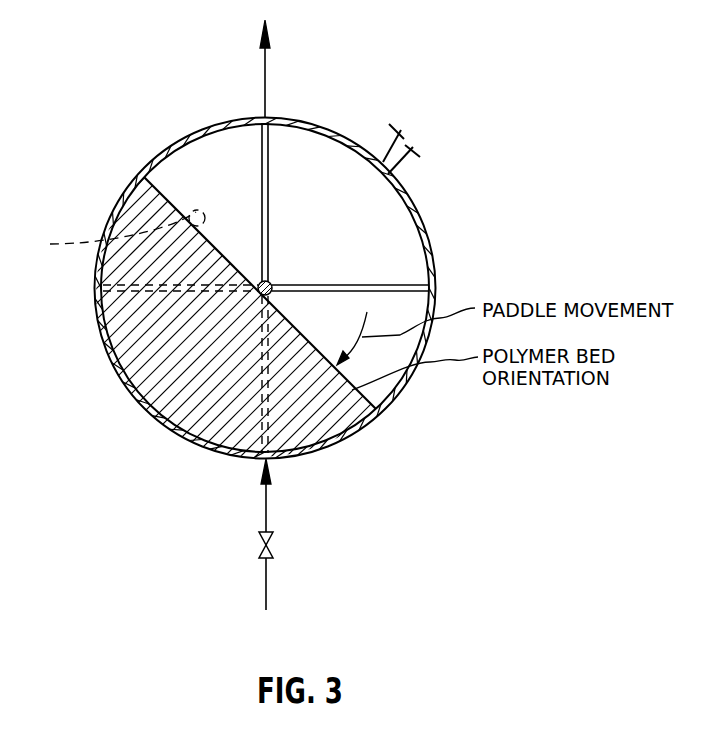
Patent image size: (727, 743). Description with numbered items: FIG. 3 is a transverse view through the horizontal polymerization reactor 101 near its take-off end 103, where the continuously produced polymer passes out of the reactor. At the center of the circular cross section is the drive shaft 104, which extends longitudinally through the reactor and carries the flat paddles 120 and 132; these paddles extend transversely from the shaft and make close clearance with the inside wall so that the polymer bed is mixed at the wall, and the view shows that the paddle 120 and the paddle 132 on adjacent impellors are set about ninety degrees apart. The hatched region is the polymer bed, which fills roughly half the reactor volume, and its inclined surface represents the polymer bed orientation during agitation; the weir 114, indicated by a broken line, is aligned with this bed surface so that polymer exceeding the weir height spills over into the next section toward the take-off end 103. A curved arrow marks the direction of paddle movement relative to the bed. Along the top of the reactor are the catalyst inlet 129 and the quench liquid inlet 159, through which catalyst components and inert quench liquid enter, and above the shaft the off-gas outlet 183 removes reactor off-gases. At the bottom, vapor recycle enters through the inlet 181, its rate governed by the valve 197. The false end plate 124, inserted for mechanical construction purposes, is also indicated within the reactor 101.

The horizontal polymerization reactor 101 is at (387, 413).
The take-off end 103 is at (382, 207).
The drive shaft 104 is at (255, 298).
The weir 114 is at (115, 231).
The paddle 120 is at (272, 176).
The false end plate 124 is at (331, 208).
The catalyst inlet 129 is at (397, 128).
The paddle 132 is at (407, 282).
The quench liquid inlet 159 is at (414, 150).
The vapor recycle inlet 181 is at (265, 493).
The off-gas outlet 183 is at (265, 70).
The valve 197 is at (262, 548).